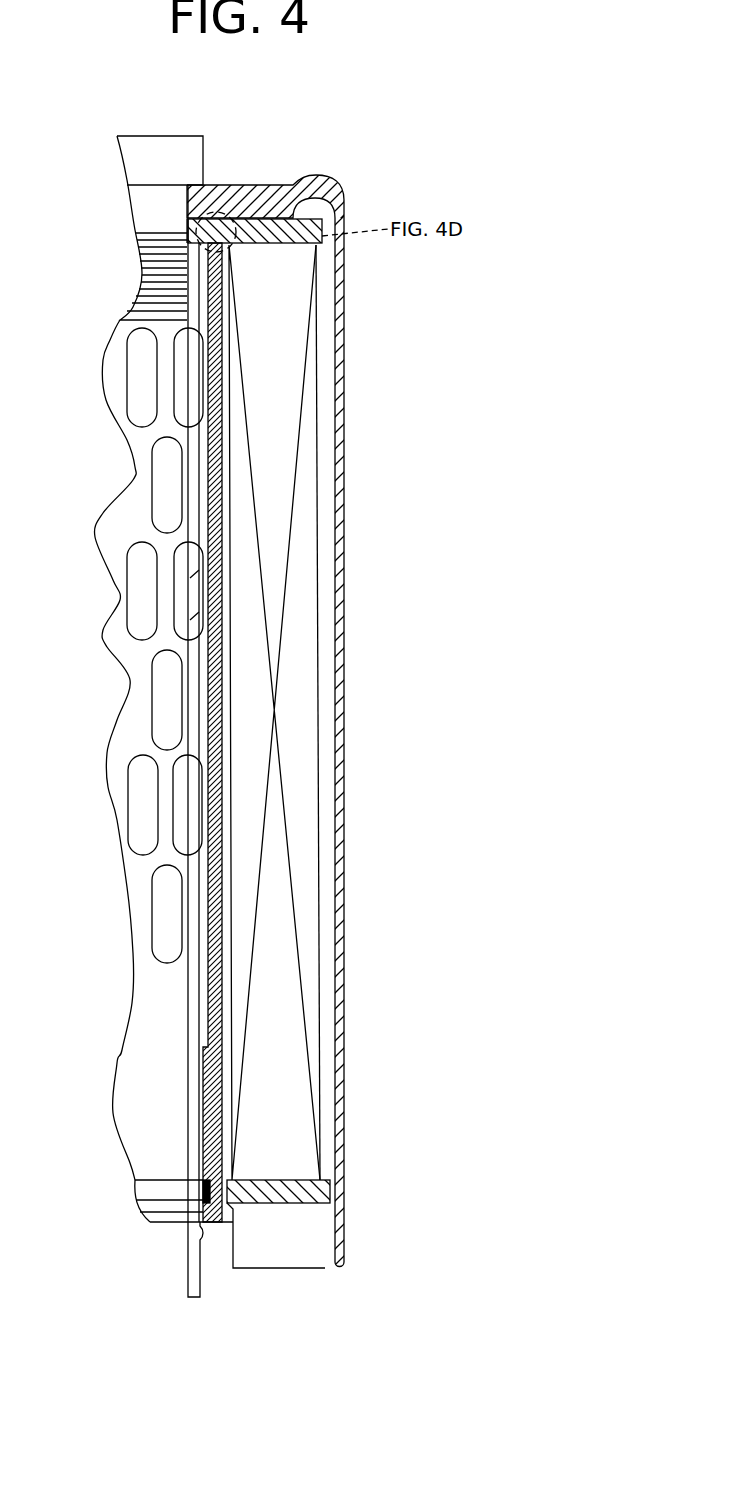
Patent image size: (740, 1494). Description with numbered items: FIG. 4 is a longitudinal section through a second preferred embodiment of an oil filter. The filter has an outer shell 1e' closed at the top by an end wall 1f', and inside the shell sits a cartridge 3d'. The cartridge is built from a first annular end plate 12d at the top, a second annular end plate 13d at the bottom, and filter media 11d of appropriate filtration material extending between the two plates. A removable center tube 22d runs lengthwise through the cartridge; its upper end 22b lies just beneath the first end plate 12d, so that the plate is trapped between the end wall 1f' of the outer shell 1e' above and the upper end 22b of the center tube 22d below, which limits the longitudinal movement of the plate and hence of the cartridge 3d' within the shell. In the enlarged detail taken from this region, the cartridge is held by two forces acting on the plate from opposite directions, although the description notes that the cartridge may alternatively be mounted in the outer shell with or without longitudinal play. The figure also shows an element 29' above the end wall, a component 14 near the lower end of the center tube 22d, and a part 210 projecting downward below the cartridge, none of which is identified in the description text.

The terminal block 29' is at (187, 152).
The end wall 1f' is at (265, 180).
The outer shell 1e' is at (370, 733).
The upper end of removable center tube 22b is at (187, 222).
The first annular end plate 12d is at (267, 248).
The filter media 11d is at (300, 365).
The cartridge 3d' is at (360, 712).
The center tube 22d is at (215, 1107).
The second annular end plate 13d is at (288, 1203).
The connecting piece 14 is at (223, 1224).
The lead rod 210 is at (196, 1300).